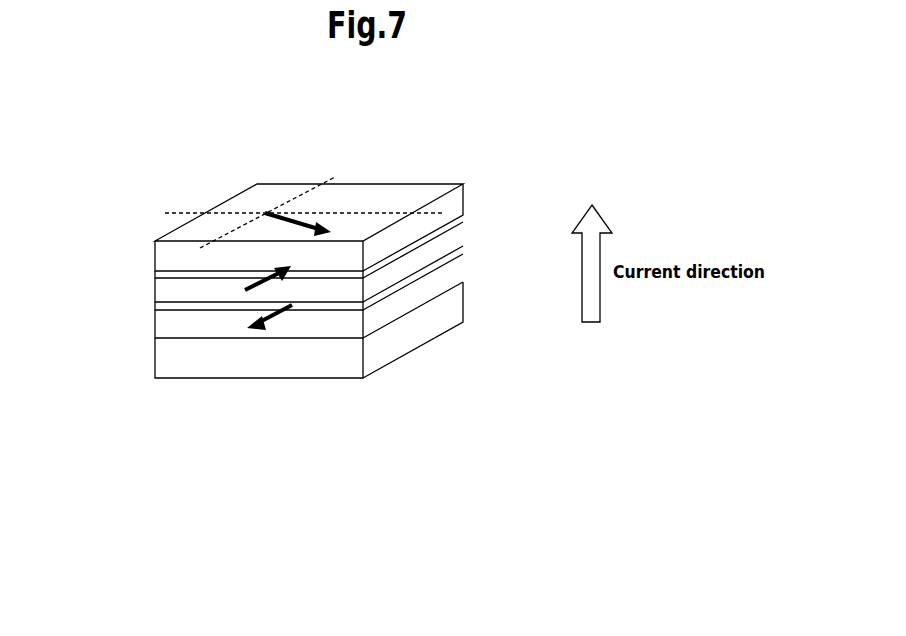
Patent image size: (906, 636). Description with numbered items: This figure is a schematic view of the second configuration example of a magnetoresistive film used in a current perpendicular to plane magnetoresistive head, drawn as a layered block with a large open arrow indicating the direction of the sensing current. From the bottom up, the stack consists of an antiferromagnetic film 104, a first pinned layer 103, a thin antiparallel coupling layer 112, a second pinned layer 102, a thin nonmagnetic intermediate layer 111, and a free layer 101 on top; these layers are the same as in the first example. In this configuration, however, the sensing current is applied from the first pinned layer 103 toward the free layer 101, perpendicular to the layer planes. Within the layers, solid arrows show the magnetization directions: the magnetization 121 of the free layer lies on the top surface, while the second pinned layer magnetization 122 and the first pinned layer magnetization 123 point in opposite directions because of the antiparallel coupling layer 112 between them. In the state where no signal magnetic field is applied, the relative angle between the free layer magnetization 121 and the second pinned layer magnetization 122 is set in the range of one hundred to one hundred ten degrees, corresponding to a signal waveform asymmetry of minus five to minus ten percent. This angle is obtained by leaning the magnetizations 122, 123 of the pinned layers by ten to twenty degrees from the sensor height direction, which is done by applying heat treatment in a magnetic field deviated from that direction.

The free layer 101 is at (168, 258).
The second pinned layer 102 is at (168, 293).
The first pinned layer 103 is at (168, 330).
The antiferromagnetic film 104 is at (168, 360).
The nonmagnetic intermediate layer 111 is at (447, 226).
The antiparallel coupling layer 112 is at (447, 260).
The magnetization of the free layer 121 is at (332, 225).
The magnetization of the second pinned layer 122 is at (288, 282).
The magnetization of the first pinned layer 123 is at (277, 328).